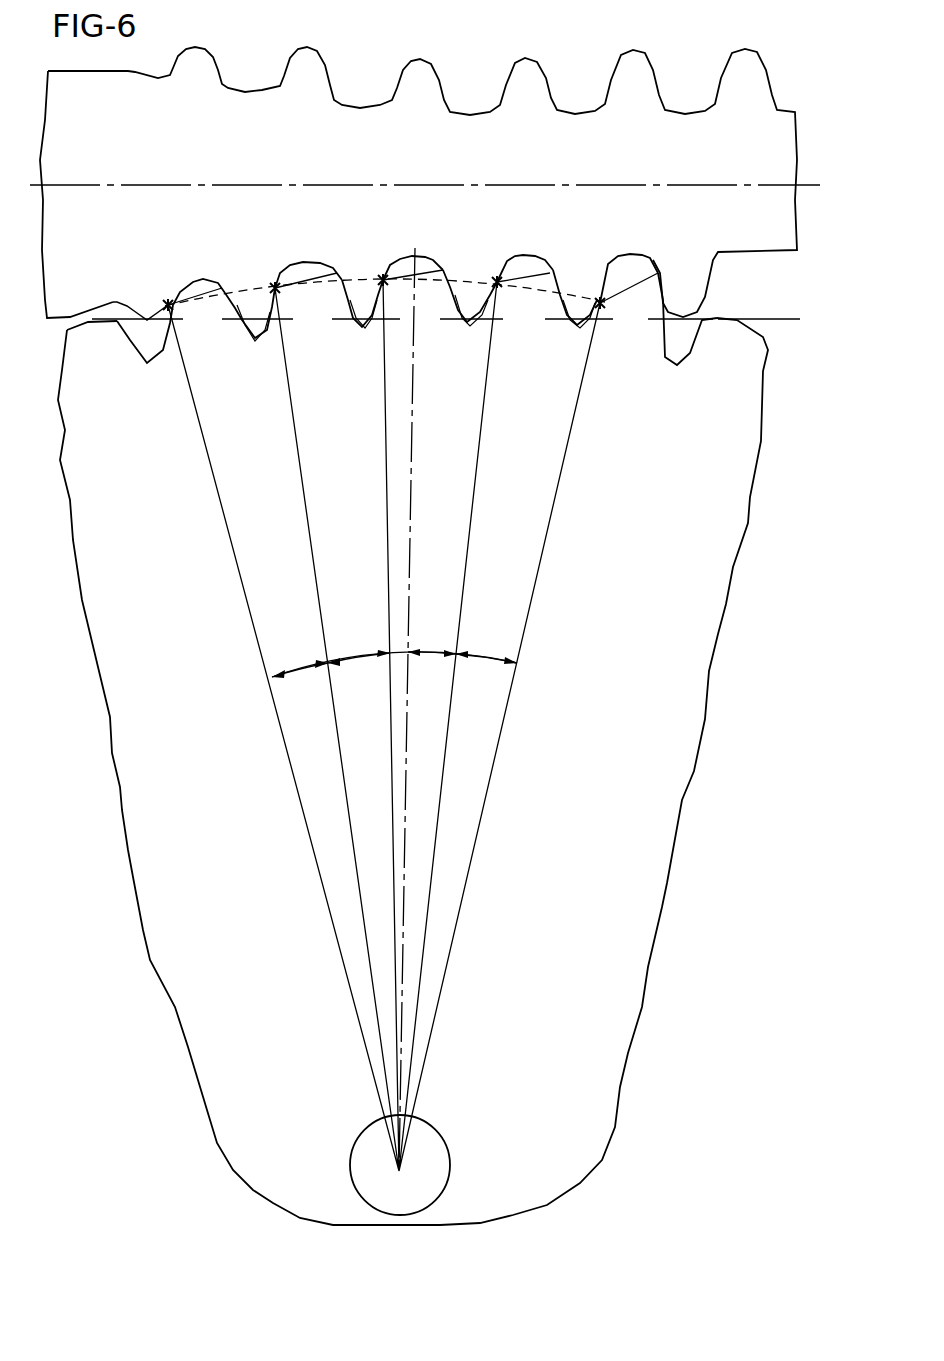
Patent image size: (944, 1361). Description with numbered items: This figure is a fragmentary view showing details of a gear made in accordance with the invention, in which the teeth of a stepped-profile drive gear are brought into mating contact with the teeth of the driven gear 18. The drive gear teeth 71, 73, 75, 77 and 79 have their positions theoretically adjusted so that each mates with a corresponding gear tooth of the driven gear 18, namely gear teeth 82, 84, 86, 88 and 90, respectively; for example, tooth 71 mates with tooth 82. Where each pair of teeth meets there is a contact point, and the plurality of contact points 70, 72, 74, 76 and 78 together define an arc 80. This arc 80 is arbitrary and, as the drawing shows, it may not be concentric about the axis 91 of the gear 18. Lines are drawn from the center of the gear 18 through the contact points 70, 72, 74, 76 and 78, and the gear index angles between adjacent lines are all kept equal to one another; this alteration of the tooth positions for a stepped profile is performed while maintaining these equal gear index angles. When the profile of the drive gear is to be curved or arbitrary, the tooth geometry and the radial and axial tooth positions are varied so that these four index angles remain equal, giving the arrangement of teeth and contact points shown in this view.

The driven gear 18 is at (127, 785).
The contact point 70 is at (168, 305).
The tooth 71 is at (145, 318).
The contact point 72 is at (272, 284).
The tooth 73 is at (252, 308).
The contact point 74 is at (382, 277).
The tooth 75 is at (367, 303).
The contact point 76 is at (495, 280).
The tooth 77 is at (470, 280).
The contact point 78 is at (599, 300).
The tooth 79 is at (577, 278).
The arc 80 is at (243, 287).
The gear tooth 82 is at (207, 312).
The gear tooth 84 is at (312, 300).
The gear tooth 86 is at (432, 293).
The gear tooth 88 is at (528, 302).
The gear tooth 90 is at (636, 307).
The axis 91 is at (808, 183).